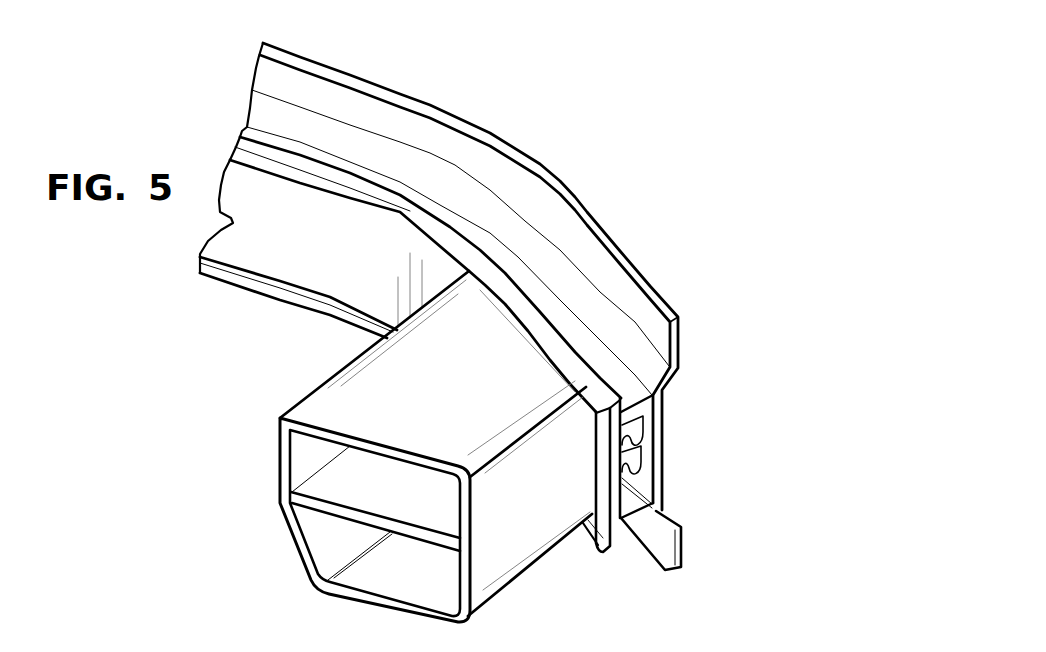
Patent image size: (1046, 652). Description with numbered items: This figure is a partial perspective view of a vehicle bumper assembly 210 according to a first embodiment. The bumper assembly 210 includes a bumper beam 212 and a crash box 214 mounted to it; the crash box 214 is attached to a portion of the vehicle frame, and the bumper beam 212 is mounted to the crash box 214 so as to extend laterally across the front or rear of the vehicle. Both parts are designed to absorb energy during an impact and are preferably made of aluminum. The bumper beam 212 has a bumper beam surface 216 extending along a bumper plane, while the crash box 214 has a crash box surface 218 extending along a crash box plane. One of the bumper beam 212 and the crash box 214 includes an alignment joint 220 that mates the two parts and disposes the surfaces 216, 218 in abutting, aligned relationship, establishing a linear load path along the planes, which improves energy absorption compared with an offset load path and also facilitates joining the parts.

The vehicle bumper assembly 210 is at (569, 139).
The bumper beam 212 is at (586, 214).
The crash box 214 is at (540, 562).
The bumper beam surface 216 is at (598, 358).
The crash box surface 218 is at (405, 433).
The alignment joint 220 is at (388, 203).